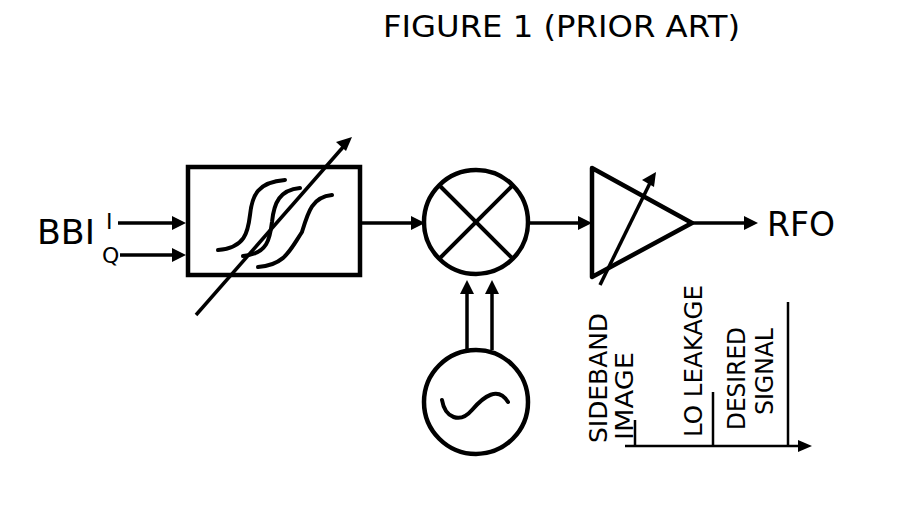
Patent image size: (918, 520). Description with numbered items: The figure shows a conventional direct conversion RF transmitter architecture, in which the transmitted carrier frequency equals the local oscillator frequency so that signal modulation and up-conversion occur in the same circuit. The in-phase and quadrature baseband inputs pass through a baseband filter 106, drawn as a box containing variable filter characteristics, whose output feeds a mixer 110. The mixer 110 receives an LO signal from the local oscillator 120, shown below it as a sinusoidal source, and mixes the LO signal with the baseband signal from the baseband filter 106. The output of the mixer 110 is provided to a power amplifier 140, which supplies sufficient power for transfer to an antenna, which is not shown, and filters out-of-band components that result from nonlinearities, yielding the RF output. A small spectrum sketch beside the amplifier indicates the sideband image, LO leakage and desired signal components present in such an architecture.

The baseband filter 106 is at (233, 166).
The mixer 110 is at (490, 171).
The local oscillator 120 is at (423, 398).
The power amplifier 140 is at (623, 177).